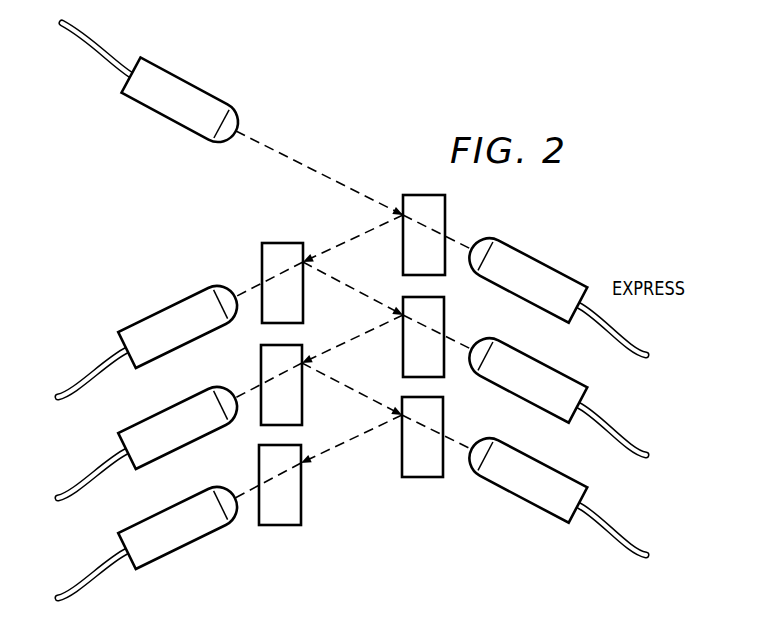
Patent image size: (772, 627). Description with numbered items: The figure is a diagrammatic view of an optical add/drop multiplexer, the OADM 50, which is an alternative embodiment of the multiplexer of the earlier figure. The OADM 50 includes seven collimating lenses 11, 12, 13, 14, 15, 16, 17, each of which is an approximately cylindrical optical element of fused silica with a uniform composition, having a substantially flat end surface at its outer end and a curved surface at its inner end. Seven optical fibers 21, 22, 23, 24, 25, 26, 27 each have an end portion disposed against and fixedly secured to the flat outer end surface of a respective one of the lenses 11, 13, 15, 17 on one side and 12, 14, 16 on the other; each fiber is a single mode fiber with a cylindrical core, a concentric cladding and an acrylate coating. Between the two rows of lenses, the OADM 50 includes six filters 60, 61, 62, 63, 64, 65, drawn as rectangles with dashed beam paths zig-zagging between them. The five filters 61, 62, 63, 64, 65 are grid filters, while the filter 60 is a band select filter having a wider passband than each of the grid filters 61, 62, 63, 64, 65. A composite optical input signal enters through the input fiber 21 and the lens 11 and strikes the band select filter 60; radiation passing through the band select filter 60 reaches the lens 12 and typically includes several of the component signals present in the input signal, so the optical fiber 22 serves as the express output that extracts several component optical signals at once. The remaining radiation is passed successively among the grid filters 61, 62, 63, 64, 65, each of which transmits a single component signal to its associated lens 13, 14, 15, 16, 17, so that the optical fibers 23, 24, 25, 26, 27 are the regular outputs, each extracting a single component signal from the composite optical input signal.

The collimating lens 11 is at (182, 80).
The collimating lens 12 is at (544, 263).
The collimating lens 13 is at (163, 307).
The collimating lens 14 is at (540, 362).
The collimating lens 15 is at (178, 404).
The collimating lens 16 is at (522, 500).
The collimating lens 17 is at (182, 552).
The input fiber 21 is at (80, 43).
The optical fiber 22 is at (628, 342).
The optical fiber 23 is at (81, 384).
The optical fiber 24 is at (628, 442).
The optical fiber 25 is at (81, 485).
The optical fiber 26 is at (628, 542).
The optical fiber 27 is at (81, 585).
The OADM 50 is at (368, 165).
The band select filter 60 is at (445, 213).
The grid filter 61 is at (262, 262).
The grid filter 62 is at (445, 313).
The grid filter 63 is at (261, 362).
The grid filter 64 is at (444, 413).
The grid filter 65 is at (259, 462).